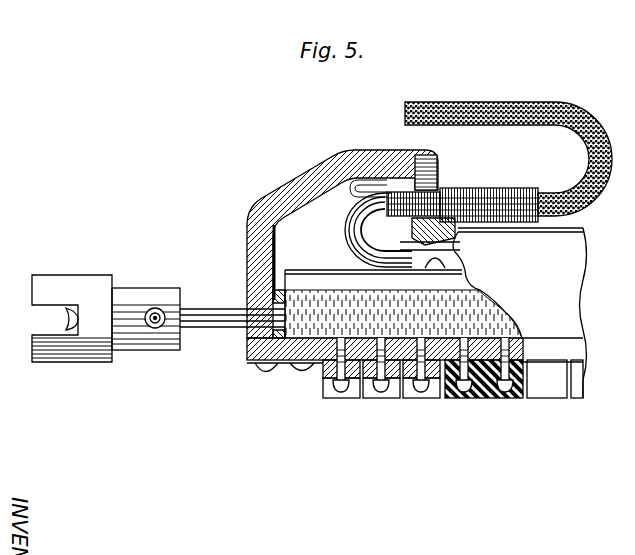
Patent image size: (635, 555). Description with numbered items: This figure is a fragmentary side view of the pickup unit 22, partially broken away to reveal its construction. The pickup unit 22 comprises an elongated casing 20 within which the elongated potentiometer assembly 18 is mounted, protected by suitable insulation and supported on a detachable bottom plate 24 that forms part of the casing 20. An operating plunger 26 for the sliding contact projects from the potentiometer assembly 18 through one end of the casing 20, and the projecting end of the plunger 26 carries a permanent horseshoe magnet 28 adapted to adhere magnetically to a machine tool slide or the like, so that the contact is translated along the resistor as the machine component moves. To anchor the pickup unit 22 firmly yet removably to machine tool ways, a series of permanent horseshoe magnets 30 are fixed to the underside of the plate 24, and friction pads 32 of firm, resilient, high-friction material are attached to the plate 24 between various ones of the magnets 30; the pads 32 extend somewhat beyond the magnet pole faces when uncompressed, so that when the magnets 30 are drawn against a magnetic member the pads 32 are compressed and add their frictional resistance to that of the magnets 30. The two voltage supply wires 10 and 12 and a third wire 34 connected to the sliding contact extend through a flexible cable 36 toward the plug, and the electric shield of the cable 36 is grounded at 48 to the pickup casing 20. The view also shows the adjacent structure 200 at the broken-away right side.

The conductor wire 10 is at (382, 233).
The conductor wire 12 is at (344, 262).
The potentiometer assembly 18 is at (316, 270).
The casing 20 is at (248, 258).
The pickup unit 22 is at (245, 193).
The bottom plate 24 is at (247, 352).
The operating plunger 26 is at (208, 327).
The permanent horseshoe magnet 28 is at (88, 280).
The permanent horseshoe magnets 30 is at (373, 398).
The friction pads 32 is at (483, 402).
The third wire 34 is at (356, 223).
The flexible cable 36 is at (585, 121).
The ground connection 48 is at (332, 187).
The housing 200 is at (630, 284).